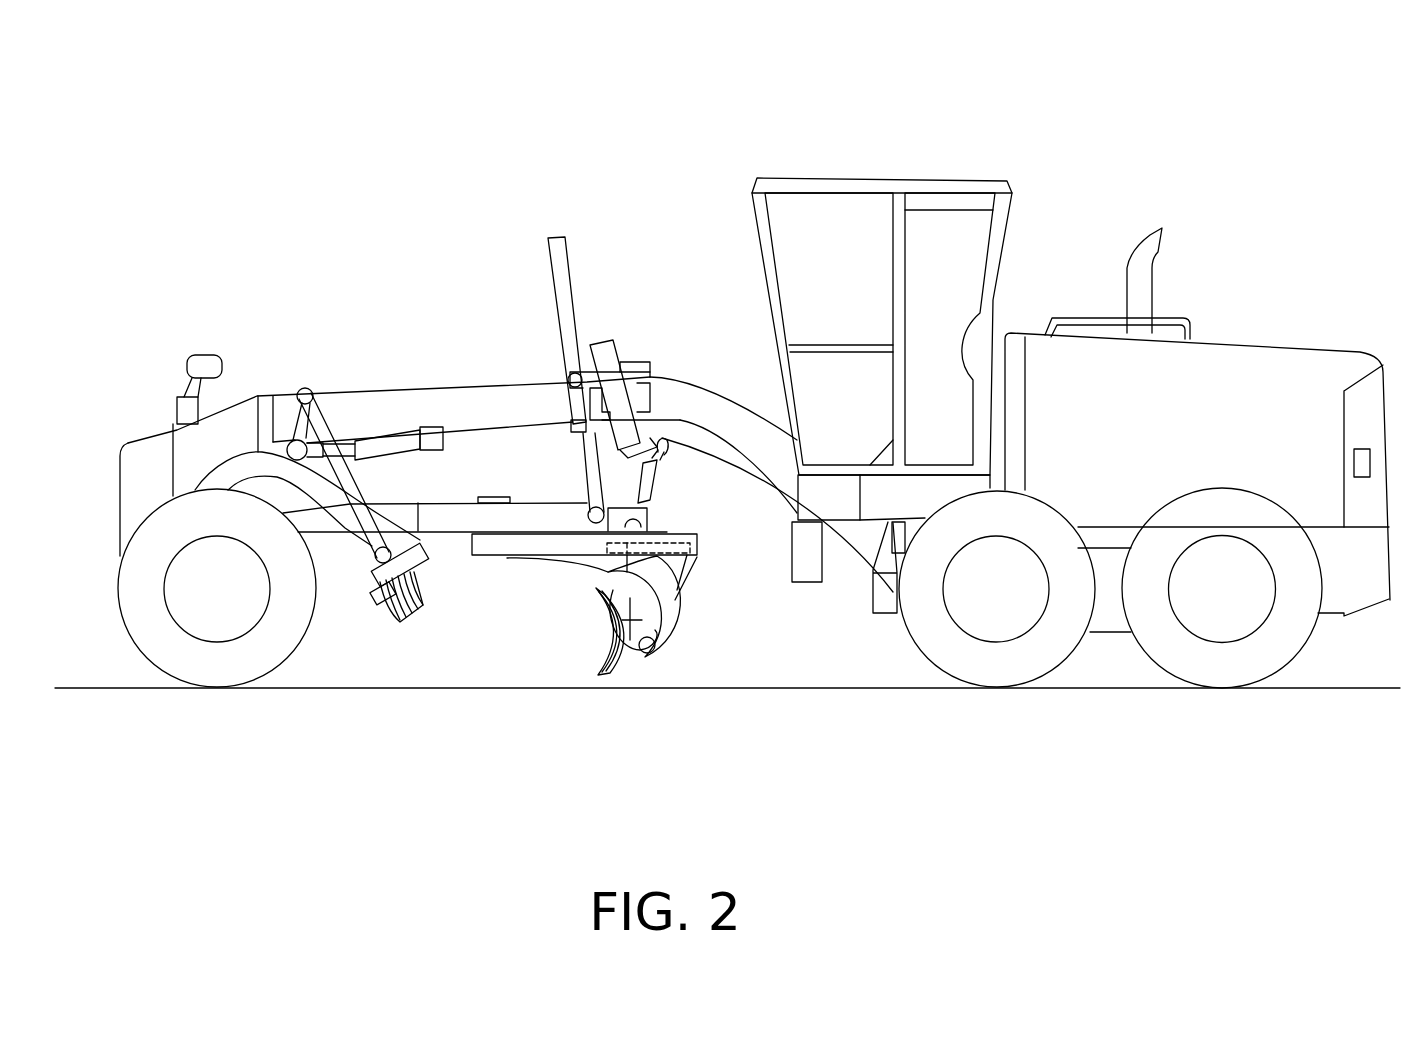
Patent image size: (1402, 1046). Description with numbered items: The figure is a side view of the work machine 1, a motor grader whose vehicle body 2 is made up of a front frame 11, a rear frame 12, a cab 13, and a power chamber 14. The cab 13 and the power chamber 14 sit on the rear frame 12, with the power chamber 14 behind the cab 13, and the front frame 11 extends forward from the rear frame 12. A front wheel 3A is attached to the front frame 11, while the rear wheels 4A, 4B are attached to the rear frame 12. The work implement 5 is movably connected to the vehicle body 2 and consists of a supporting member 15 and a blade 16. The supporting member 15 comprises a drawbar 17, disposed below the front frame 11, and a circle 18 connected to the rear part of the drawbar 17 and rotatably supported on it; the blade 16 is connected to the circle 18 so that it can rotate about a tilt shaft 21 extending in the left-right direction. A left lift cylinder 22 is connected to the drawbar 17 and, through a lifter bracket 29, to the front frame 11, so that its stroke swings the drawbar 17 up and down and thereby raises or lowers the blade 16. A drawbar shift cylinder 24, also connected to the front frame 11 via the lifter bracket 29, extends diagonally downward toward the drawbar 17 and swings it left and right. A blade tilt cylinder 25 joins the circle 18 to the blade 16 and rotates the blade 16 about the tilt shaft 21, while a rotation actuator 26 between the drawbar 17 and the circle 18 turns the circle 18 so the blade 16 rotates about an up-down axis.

The work machine 1 is at (338, 158).
The vehicle body 2 is at (1055, 205).
The front wheel 3A is at (208, 678).
The rear wheel 4A is at (1004, 672).
The rear wheel 4B is at (1219, 672).
The work implement 5 is at (712, 643).
The front frame 11 is at (382, 400).
The rear frame 12 is at (1110, 555).
The cab 13 is at (895, 182).
The power chamber 14 is at (1240, 353).
The supporting member 15 is at (455, 580).
The blade 16 is at (621, 680).
The drawbar 17 is at (458, 506).
The circle 18 is at (503, 550).
The tilt shaft 21 is at (655, 657).
The left lift cylinder 22 is at (568, 265).
The drawbar shift cylinder 24 is at (673, 483).
The blade tilt cylinder 25 is at (703, 547).
The rotation actuator 26 is at (500, 497).
The lifter bracket 29 is at (622, 353).